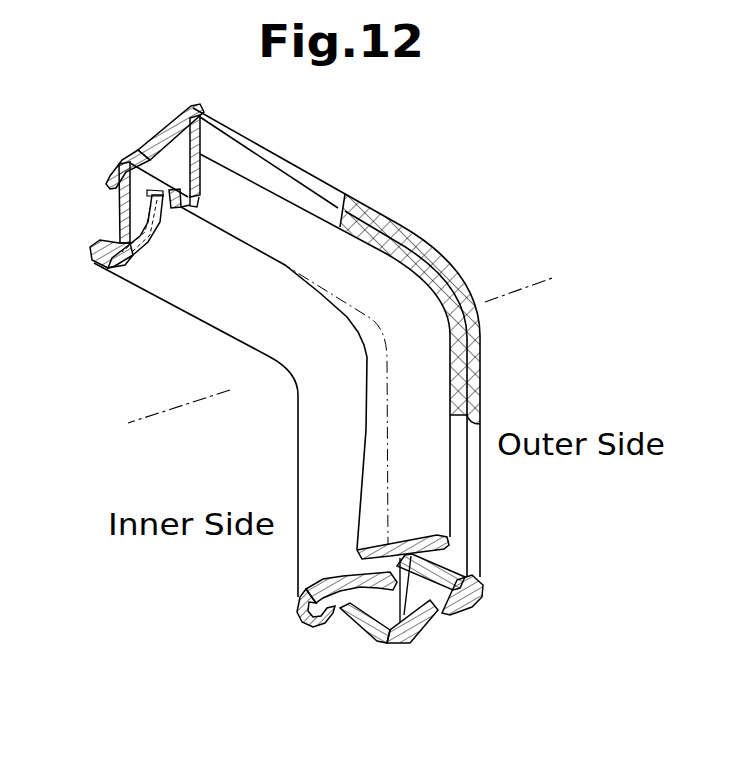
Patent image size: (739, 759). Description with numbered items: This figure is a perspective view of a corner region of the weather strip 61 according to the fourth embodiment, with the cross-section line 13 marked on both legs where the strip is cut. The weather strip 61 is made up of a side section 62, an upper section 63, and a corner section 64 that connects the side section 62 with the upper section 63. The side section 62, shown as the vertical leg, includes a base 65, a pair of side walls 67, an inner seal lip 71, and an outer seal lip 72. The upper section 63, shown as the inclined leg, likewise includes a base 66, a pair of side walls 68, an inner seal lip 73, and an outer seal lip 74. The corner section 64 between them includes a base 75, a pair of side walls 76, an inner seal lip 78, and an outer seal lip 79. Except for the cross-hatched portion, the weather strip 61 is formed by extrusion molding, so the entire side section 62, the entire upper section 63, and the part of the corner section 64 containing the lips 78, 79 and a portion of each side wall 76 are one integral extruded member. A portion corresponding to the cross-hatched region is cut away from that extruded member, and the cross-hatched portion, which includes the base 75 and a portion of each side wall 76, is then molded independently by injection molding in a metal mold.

The section line 13 is at (128, 423).
The weather strip 61 is at (303, 145).
The side section 62 is at (434, 624).
The upper section 63 is at (148, 137).
The corner section 64 is at (297, 393).
The base 65 is at (412, 608).
The base 66 is at (132, 143).
The side walls 67 is at (455, 563).
The side walls 68 is at (207, 150).
The inner seal lip 71 is at (368, 588).
The outer seal lip 72 is at (450, 605).
The inner seal lip 73 is at (147, 220).
The outer seal lip 74 is at (176, 205).
The base 75 is at (460, 270).
The side walls 76 is at (452, 316).
The inner seal lip 78 is at (296, 349).
The outer seal lip 79 is at (260, 252).